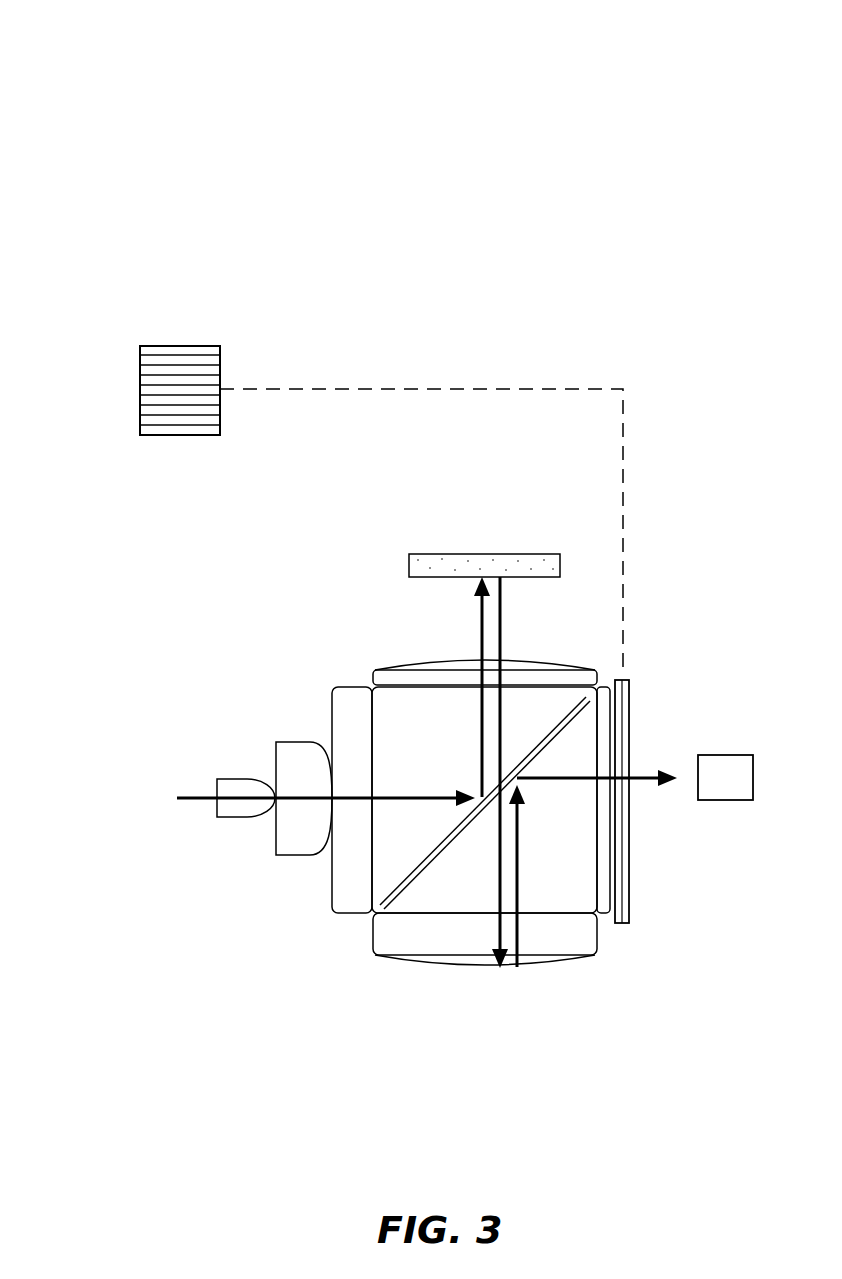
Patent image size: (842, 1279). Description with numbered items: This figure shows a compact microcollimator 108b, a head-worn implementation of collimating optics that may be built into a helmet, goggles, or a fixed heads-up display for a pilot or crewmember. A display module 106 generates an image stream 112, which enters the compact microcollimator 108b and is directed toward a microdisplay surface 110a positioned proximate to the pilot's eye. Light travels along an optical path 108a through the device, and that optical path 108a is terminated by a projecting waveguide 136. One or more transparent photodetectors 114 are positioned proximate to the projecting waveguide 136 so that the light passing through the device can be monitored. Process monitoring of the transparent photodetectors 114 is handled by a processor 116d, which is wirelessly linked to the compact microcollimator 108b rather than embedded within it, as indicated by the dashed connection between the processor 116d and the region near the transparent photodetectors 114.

The compact microcollimator 108b is at (86, 75).
The processor 116d is at (179, 345).
The microdisplay surface 110a is at (453, 553).
The optical path 108a is at (410, 795).
The display module 106 is at (247, 778).
The image stream 112 is at (202, 800).
The transparent photodetector 114 is at (630, 707).
The projecting waveguide 136 is at (725, 777).